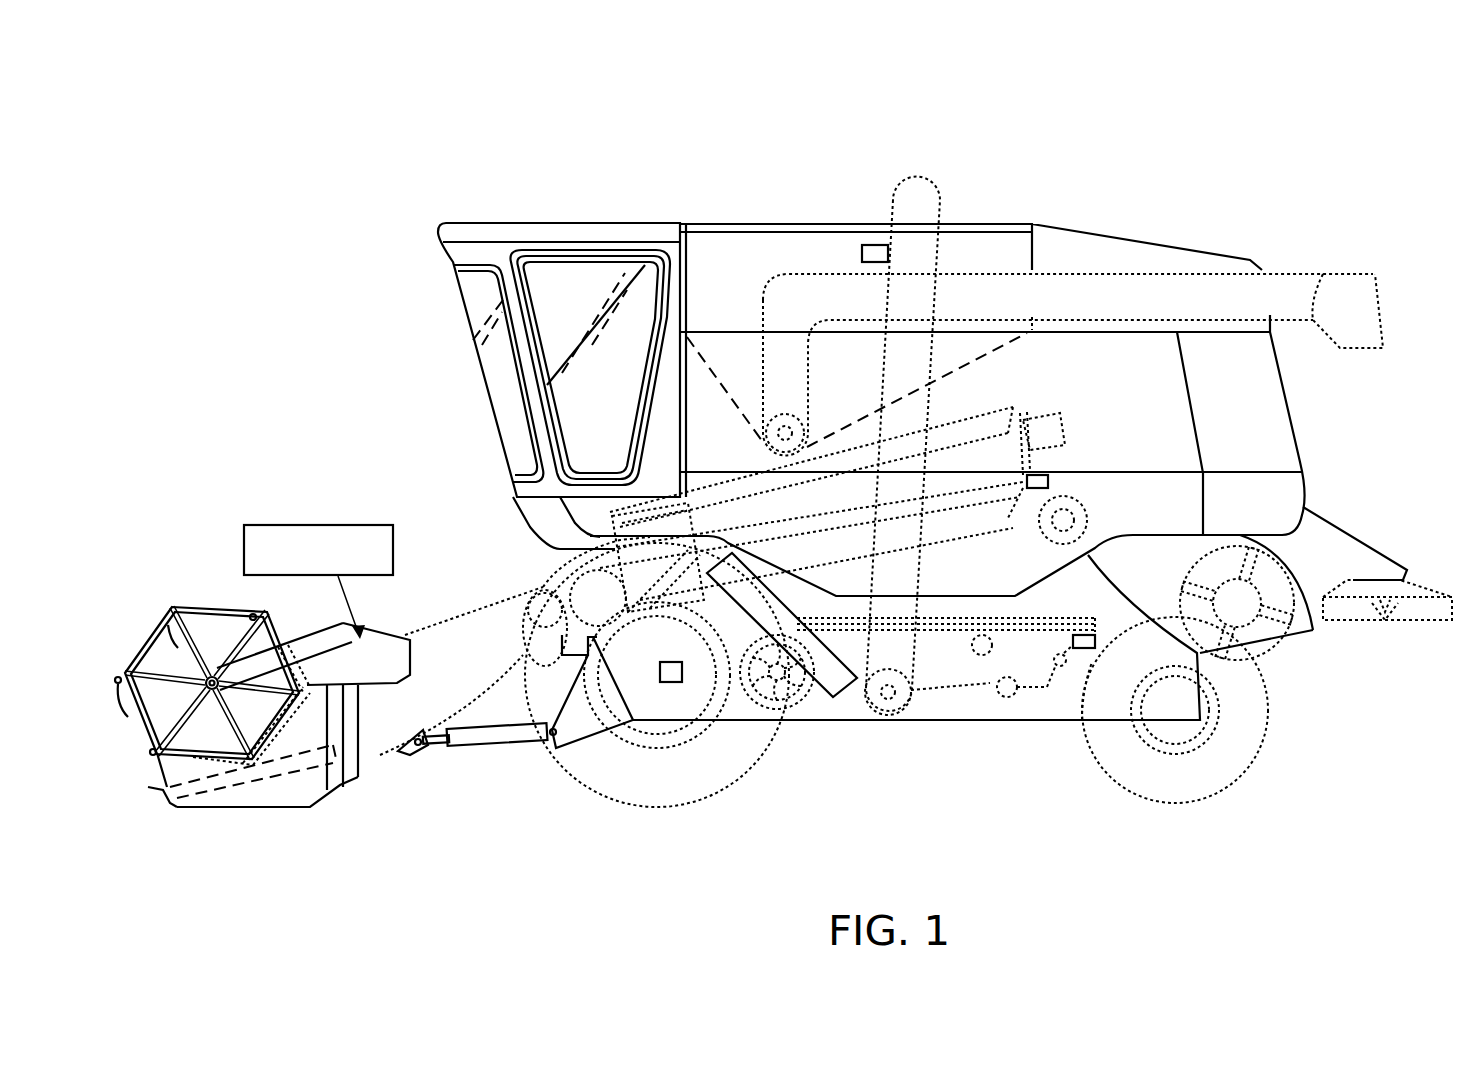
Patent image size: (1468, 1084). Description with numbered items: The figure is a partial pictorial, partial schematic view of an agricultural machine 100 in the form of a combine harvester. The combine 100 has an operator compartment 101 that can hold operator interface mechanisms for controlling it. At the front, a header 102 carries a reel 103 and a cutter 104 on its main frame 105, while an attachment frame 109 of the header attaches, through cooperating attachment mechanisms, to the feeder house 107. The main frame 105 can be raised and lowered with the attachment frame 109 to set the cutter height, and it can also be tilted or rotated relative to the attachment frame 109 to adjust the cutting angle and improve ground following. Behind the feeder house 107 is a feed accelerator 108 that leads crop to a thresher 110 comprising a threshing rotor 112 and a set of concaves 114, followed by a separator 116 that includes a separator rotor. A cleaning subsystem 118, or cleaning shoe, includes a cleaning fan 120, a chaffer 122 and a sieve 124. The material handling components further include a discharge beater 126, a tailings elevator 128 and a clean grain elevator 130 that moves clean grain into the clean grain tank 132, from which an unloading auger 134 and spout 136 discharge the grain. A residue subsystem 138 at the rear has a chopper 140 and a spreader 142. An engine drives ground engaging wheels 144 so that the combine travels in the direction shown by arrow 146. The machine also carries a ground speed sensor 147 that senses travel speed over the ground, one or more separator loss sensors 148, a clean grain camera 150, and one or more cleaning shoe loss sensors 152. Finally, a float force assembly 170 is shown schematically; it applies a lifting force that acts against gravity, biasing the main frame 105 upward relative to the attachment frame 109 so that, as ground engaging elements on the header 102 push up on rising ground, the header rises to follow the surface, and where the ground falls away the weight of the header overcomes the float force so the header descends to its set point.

The agricultural machine 100 is at (1298, 97).
The operator compartment 101 is at (565, 224).
The header 102 is at (231, 603).
The reel 103 is at (148, 638).
The cutter 104 is at (147, 785).
The main frame 105 is at (290, 805).
The feeder house 107 is at (450, 620).
The feed accelerator 108 is at (577, 582).
The attachment frame 109 is at (345, 788).
The thresher 110 is at (954, 420).
The threshing rotor 112 is at (1018, 406).
The concaves 114 is at (1050, 488).
The separator 116 is at (950, 537).
The cleaning subsystem 118 is at (1087, 658).
The cleaning fan 120 is at (750, 688).
The chaffer 122 is at (1083, 623).
The sieve 124 is at (1003, 632).
The discharge beater 126 is at (1090, 518).
The tailings elevator 128 is at (828, 700).
The clean grain elevator 130 is at (917, 652).
The clean grain tank 132 is at (722, 333).
The unloading auger 134 is at (805, 433).
The spout 136 is at (1345, 270).
The residue subsystem 138 is at (1358, 531).
The chopper 140 is at (1250, 655).
The spreader 142 is at (1345, 622).
The ground engaging wheels 144 is at (1150, 803).
The arrow 146 is at (405, 440).
The ground speed sensor 147 is at (668, 684).
The separator loss sensors 148 is at (1045, 470).
The clean grain camera 150 is at (872, 244).
The cleaning shoe loss sensors 152 is at (1097, 640).
The float force assembly 170 is at (274, 525).